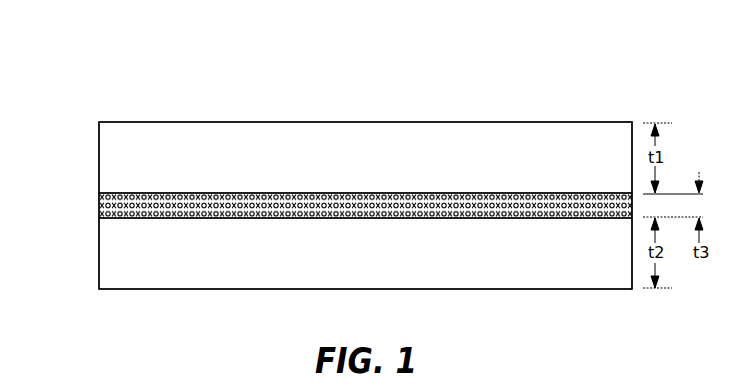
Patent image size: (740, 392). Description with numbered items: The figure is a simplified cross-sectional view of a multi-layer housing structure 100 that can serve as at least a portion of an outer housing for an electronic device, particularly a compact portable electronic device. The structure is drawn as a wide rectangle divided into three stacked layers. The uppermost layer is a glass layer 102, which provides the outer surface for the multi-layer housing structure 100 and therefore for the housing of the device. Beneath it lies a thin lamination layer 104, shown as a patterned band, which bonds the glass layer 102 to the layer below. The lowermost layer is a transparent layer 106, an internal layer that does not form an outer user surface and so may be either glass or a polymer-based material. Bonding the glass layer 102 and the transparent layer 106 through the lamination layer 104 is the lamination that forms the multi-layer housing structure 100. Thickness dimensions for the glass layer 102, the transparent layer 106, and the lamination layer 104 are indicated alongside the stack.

The multi-layer housing structure 100 is at (568, 92).
The glass layer 102 is at (156, 140).
The lamination layer 104 is at (99, 207).
The transparent layer 106 is at (158, 272).